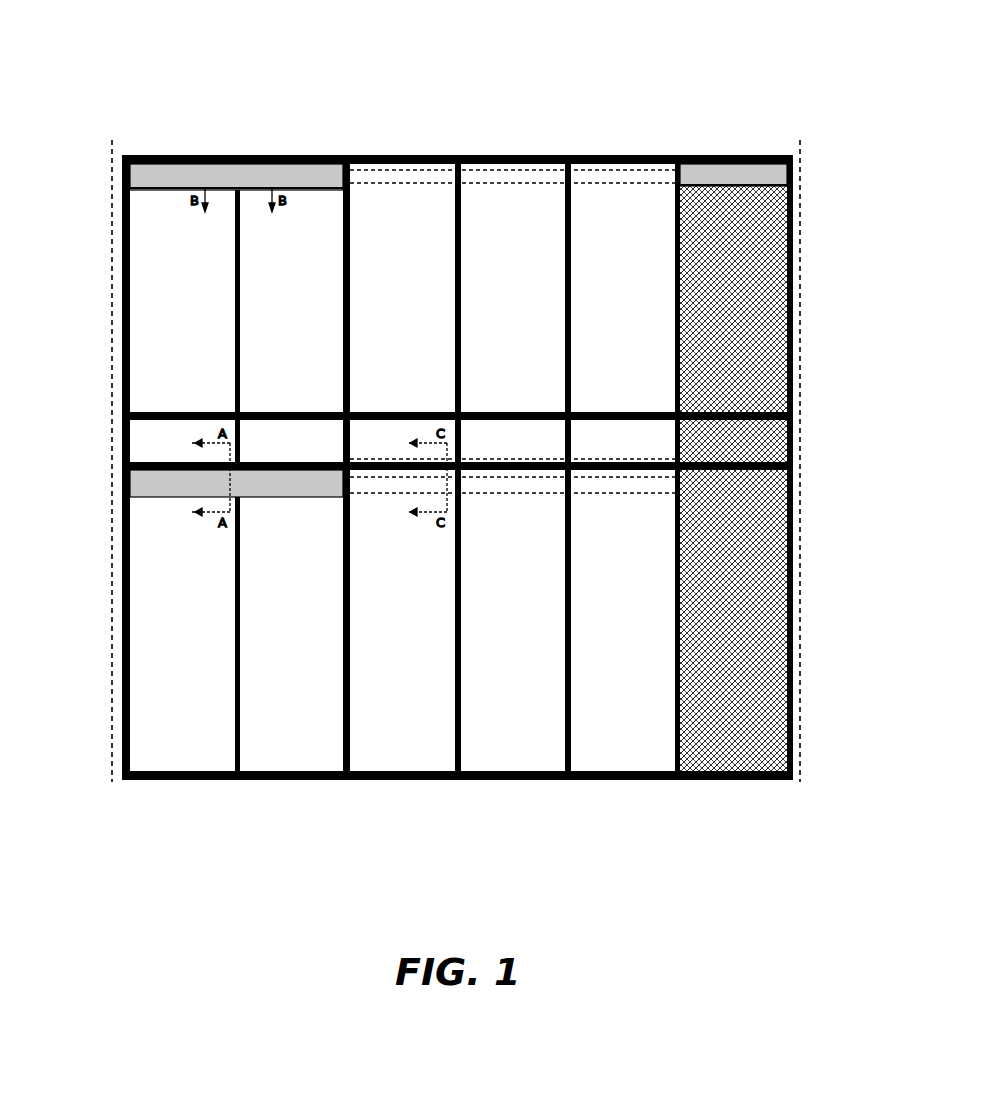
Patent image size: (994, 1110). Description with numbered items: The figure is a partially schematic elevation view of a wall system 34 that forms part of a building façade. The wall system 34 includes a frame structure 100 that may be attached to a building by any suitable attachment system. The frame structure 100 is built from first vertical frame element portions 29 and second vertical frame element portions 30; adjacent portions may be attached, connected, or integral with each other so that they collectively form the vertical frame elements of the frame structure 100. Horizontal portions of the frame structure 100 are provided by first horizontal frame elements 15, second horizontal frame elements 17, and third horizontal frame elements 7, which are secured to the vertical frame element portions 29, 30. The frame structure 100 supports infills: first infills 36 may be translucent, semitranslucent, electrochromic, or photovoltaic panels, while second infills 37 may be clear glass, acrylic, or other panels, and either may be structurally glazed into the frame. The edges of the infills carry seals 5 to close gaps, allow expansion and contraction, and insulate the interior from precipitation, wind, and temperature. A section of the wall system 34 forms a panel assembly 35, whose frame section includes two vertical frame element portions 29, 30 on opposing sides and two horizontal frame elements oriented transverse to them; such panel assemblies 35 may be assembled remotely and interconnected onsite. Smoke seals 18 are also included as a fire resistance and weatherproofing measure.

The frame structure 100 is at (172, 128).
The wall system 34 is at (383, 68).
The first horizontal frame element 15 is at (138, 157).
The panel assembly 35 is at (305, 185).
The smoke seal 18 is at (370, 157).
The first vertical frame element portion 29 is at (543, 280).
The second vertical frame element portion 30 is at (581, 280).
The second horizontal frame element 17 is at (130, 190).
The second infill 37 is at (375, 283).
The third horizontal frame element 7 is at (290, 467).
The first infill 36 is at (752, 328).
The seal 5 is at (150, 780).